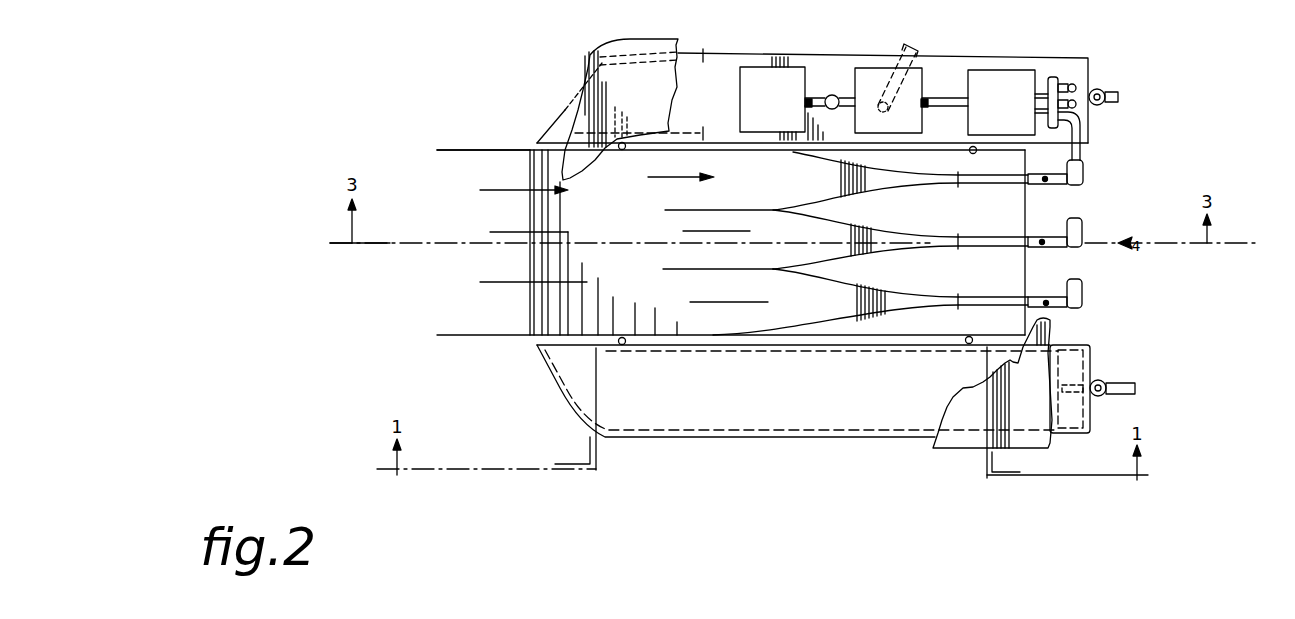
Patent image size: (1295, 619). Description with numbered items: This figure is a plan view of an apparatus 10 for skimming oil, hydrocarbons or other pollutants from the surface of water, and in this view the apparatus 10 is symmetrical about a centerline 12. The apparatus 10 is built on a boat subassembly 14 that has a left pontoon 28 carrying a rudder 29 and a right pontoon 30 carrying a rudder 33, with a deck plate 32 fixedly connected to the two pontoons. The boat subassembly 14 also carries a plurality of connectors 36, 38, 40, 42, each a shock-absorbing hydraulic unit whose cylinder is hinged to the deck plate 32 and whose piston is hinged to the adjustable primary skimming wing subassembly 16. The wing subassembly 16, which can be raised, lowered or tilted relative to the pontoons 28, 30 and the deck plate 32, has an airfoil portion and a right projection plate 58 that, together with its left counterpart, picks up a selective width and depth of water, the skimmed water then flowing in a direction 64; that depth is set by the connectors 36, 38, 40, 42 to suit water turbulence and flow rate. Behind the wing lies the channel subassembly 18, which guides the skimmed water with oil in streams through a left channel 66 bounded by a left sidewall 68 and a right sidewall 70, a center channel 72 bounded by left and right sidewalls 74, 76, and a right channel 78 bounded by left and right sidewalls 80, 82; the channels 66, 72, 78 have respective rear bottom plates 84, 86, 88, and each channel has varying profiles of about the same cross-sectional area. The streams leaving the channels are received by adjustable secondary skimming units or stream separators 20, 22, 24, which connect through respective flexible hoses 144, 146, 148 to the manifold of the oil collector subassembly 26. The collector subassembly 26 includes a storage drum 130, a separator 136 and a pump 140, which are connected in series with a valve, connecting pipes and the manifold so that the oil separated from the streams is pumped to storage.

The apparatus 10 is at (1190, 100).
The centerline 12 is at (1215, 246).
The boat subassembly 14 is at (806, 48).
The primary skimming wing subassembly 16 is at (522, 303).
The channel subassembly 18 is at (766, 275).
The secondary skimming unit 20 is at (1050, 308).
The secondary skimming unit 22 is at (1048, 247).
The secondary skimming unit 24 is at (1048, 181).
The oil collector subassembly 26 is at (1100, 114).
The left pontoon 28 is at (573, 378).
The rudder 29 is at (1115, 388).
The right pontoon 30 is at (560, 125).
The deck plate 32 is at (590, 56).
The rudder 33 is at (1108, 92).
The connector 36 is at (622, 348).
The connector 38 is at (967, 345).
The connector 40 is at (622, 152).
The connector 42 is at (970, 152).
The right projection plate 58 is at (467, 150).
The direction 64 is at (490, 282).
The left channel 66 is at (714, 328).
The left sidewall 68 is at (830, 328).
The right sidewall 70 is at (830, 282).
The center channel 72 is at (714, 263).
The left sidewall 74 is at (828, 255).
The right sidewall 76 is at (828, 222).
The right channel 78 is at (714, 202).
The left sidewall 80 is at (830, 200).
The right sidewall 82 is at (828, 160).
The rear bottom plate 84 is at (993, 308).
The rear bottom plate 86 is at (993, 244).
The rear bottom plate 88 is at (1000, 188).
The storage drum 130 is at (768, 72).
The separator 136 is at (868, 75).
The pump 140 is at (1000, 78).
The flexible hose 144 is at (1083, 297).
The flexible hose 146 is at (1083, 232).
The flexible hose 148 is at (1085, 174).